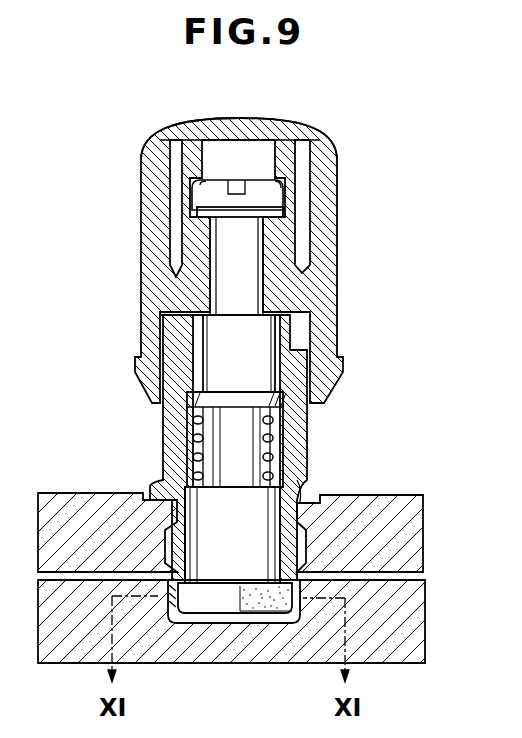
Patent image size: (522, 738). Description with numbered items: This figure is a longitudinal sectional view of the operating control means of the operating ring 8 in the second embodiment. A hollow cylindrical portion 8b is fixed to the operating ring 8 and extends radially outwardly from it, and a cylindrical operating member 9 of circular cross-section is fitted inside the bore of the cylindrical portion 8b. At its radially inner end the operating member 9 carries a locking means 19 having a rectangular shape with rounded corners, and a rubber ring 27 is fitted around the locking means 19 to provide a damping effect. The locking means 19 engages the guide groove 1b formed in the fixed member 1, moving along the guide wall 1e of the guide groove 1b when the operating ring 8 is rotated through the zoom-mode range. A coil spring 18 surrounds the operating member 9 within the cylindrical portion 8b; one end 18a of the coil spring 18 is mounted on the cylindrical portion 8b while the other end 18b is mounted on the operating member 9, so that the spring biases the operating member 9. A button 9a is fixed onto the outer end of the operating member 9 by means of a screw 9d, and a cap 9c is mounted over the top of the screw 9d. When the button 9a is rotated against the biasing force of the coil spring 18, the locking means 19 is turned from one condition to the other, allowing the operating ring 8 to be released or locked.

The fixed member with guide groove 1 is at (418, 620).
The guide groove 1b is at (226, 614).
The guide wall 1e is at (292, 615).
The operating ring 8 is at (410, 527).
The hollow cylindrical portion 8b is at (300, 427).
The operating member 9 is at (250, 340).
The button 9a is at (150, 266).
The cap 9c is at (284, 118).
The screw 9d is at (200, 197).
The coil spring 18 is at (196, 440).
The one end of the coil spring 18a is at (185, 402).
The other end of the coil spring 18b is at (285, 503).
The locking means 19 is at (195, 612).
The rubber ring 27 is at (266, 612).